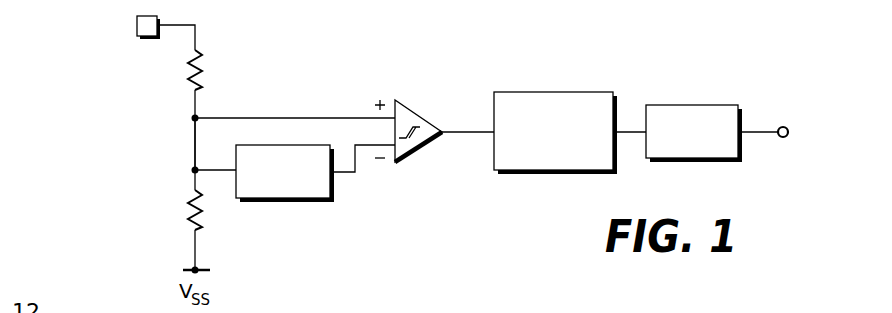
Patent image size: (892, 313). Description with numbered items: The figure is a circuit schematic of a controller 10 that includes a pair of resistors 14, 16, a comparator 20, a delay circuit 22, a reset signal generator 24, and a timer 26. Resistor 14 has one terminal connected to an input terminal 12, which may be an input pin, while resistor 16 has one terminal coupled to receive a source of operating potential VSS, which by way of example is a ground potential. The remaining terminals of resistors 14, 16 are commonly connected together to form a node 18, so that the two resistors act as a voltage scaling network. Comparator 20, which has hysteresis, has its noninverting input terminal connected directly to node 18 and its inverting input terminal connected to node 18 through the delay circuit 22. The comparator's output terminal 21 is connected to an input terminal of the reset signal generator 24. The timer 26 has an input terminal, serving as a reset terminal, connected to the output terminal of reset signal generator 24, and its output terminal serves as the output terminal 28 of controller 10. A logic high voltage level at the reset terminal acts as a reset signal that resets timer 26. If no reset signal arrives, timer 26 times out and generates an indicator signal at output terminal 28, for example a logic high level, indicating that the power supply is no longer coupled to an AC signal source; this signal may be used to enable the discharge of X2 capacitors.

The controller 10 is at (787, 228).
The input terminal 12 is at (137, 23).
The resistor 14 is at (201, 57).
The resistor 16 is at (195, 208).
The node 18 is at (195, 141).
The comparator 20 is at (418, 156).
The output terminal 21 is at (450, 131).
The delay circuit 22 is at (275, 201).
The reset signal generator 24 is at (580, 92).
The timer 26 is at (705, 105).
The output terminal 28 is at (788, 128).